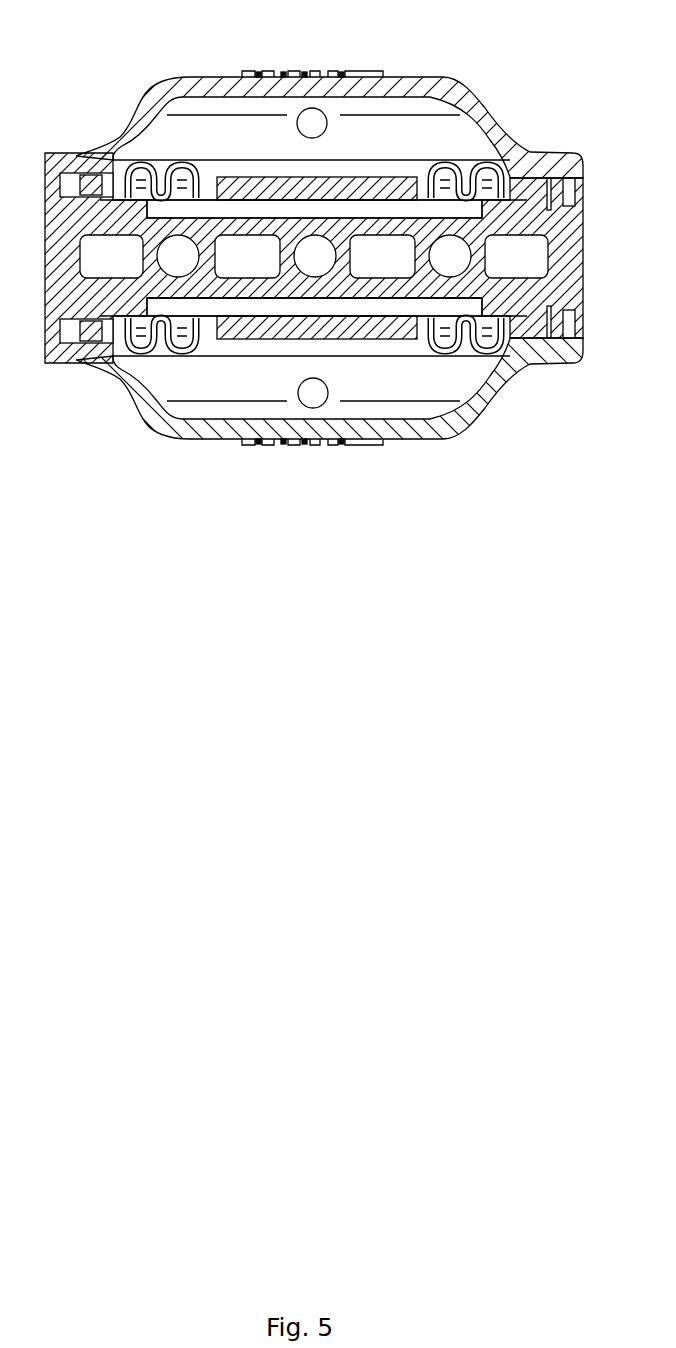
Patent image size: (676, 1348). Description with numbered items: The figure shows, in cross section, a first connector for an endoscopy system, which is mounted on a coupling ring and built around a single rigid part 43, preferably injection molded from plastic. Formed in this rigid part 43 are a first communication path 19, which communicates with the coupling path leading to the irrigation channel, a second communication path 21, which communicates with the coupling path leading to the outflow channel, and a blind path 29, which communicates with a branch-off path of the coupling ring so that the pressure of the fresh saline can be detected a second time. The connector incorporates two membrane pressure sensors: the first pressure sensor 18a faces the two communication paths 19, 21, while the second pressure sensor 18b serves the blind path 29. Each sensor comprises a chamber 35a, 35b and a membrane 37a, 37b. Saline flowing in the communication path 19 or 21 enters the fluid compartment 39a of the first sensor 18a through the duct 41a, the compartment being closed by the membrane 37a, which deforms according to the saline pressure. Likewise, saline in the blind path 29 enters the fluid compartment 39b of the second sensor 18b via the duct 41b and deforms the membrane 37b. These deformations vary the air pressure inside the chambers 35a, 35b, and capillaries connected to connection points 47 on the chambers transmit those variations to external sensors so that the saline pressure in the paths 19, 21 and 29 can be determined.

The first pressure sensor 18a is at (478, 108).
The second pressure sensor 18b is at (440, 443).
The first communication path 19 is at (150, 254).
The second communication path 21 is at (470, 258).
The blind path 29 is at (338, 258).
The chamber 35a is at (420, 110).
The chamber 35b is at (218, 410).
The membrane 37a is at (231, 187).
The membrane 37b is at (254, 334).
The fluid compartment 39a is at (358, 211).
The fluid compartment 39b is at (375, 312).
The duct 41a is at (200, 251).
The duct 41b is at (328, 290).
The rigid part 43 is at (583, 230).
The connection points 47 is at (323, 478).